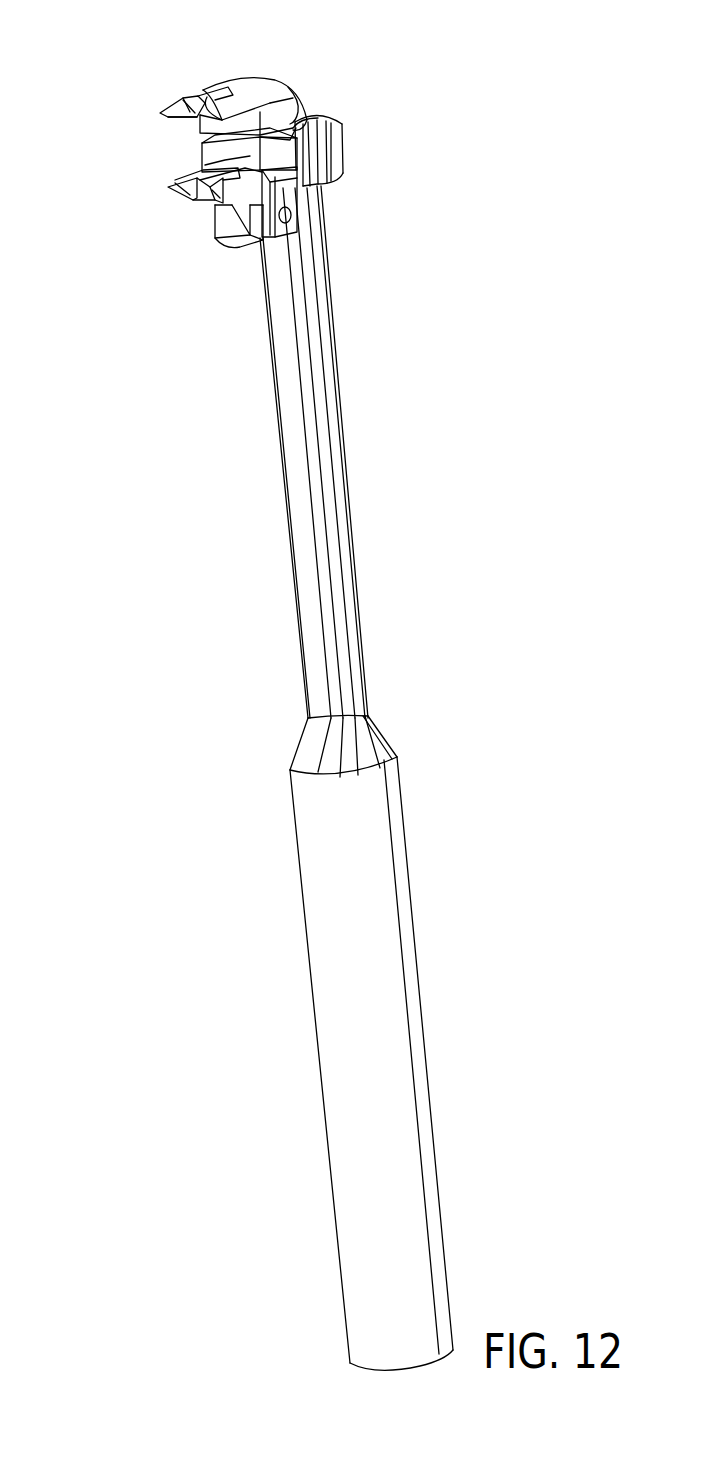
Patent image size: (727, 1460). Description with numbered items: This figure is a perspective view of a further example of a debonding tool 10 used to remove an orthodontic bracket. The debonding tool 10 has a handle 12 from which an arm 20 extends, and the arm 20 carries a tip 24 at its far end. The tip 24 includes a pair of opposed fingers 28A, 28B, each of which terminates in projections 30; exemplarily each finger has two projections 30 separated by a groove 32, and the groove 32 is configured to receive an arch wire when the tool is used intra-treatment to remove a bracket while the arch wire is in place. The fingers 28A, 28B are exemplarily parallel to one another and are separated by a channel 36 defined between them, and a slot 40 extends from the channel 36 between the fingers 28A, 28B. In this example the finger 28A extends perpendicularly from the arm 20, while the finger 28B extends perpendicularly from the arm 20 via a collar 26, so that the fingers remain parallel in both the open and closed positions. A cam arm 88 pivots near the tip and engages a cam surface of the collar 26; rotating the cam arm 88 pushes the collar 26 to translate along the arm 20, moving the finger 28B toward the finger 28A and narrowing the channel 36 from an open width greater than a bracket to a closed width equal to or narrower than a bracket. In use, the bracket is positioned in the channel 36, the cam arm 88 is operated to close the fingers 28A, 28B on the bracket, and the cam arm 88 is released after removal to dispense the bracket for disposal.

The debonding tool 10 is at (507, 470).
The handle 12 is at (397, 1072).
The arm 20 is at (338, 562).
The tip 24 is at (140, 108).
The collar 26 is at (335, 150).
The finger 28A is at (240, 87).
The finger 28B is at (273, 165).
The projections 30 is at (207, 102).
The groove 32 is at (200, 120).
The channel 36 is at (160, 155).
The slot 40 is at (325, 118).
The cam arm 88 is at (245, 237).